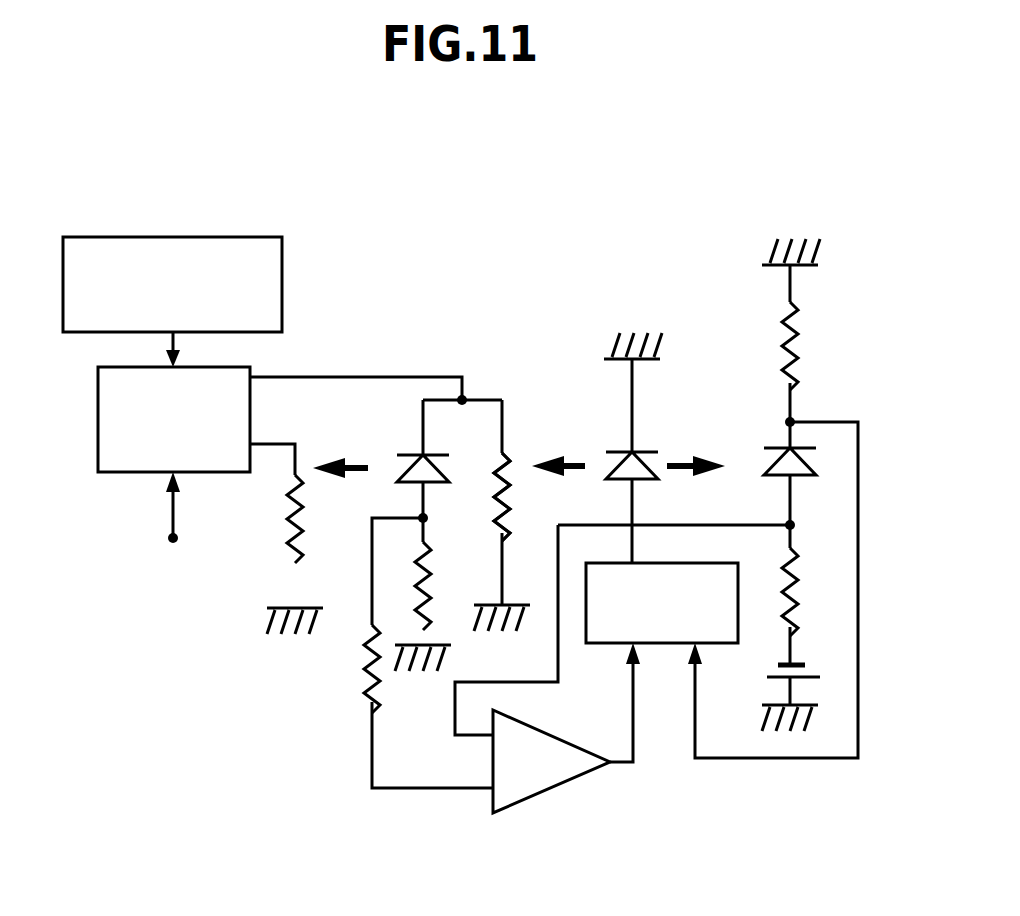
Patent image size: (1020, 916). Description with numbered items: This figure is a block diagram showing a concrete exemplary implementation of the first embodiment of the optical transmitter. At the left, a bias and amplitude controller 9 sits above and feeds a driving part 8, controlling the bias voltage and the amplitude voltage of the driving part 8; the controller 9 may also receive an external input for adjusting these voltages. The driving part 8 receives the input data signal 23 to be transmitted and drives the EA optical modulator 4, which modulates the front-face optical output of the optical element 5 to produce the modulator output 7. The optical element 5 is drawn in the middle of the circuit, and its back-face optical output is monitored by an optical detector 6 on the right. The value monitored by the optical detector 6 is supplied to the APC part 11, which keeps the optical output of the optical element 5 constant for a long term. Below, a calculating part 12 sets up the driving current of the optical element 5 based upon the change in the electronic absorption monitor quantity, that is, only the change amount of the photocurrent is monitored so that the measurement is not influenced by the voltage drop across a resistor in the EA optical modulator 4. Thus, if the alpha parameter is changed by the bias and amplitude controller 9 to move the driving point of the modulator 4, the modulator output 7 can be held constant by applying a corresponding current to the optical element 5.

The bias and amplitude controller 9 is at (282, 288).
The driving part 8 is at (98, 428).
The data signal 23 is at (171, 539).
The modulator output 7 is at (340, 440).
The EA optical modulator 4 is at (462, 445).
The optical element 5 is at (652, 425).
The optical detector 6 is at (815, 435).
The APC part 11 is at (720, 645).
The calculating part 12 is at (500, 812).